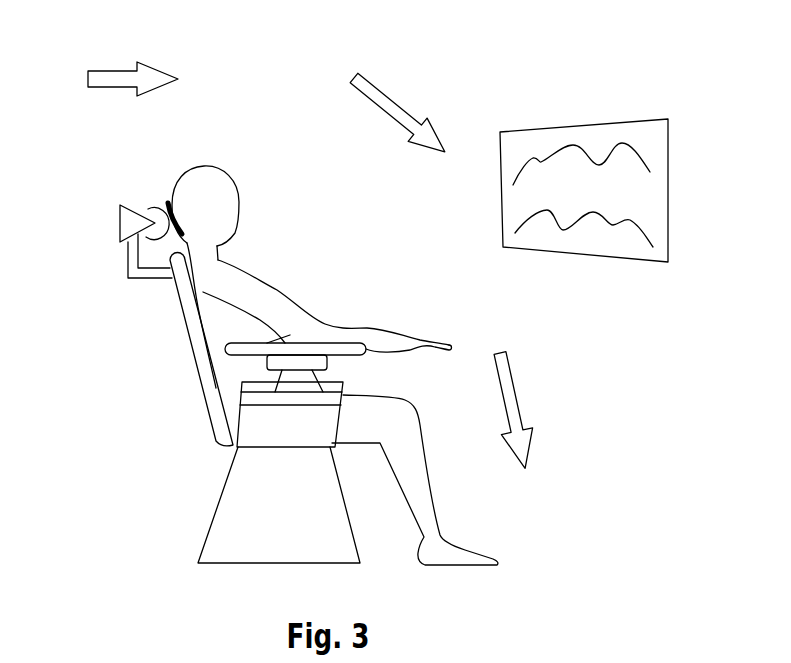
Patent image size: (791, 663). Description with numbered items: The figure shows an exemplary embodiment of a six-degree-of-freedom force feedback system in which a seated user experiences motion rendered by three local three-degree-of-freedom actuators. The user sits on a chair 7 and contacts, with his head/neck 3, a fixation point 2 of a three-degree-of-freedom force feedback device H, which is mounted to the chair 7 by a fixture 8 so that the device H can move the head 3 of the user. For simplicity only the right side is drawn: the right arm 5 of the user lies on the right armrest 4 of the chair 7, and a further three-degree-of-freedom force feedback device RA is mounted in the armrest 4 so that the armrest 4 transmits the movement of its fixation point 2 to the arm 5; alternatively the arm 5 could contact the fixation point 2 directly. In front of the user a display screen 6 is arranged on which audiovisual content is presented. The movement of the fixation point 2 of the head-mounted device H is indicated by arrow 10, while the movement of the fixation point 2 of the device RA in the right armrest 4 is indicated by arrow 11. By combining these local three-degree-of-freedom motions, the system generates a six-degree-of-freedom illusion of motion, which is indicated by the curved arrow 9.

The fixation point 2 is at (169, 198).
The head/neck 3 is at (242, 179).
The right armrest 4 is at (362, 352).
The right arm 5 is at (325, 322).
The display screen 6 is at (617, 120).
The chair 7 is at (188, 365).
The fixture 8 is at (128, 279).
The curved arrow 9 is at (396, 103).
The arrow 10 is at (105, 70).
The arrow 11 is at (512, 386).
The force feedback device H is at (120, 218).
The force feedback device RA is at (293, 402).